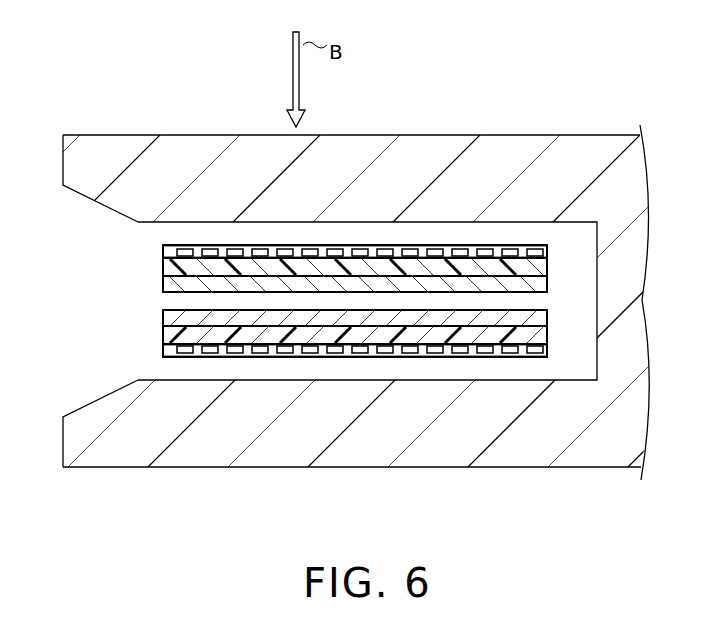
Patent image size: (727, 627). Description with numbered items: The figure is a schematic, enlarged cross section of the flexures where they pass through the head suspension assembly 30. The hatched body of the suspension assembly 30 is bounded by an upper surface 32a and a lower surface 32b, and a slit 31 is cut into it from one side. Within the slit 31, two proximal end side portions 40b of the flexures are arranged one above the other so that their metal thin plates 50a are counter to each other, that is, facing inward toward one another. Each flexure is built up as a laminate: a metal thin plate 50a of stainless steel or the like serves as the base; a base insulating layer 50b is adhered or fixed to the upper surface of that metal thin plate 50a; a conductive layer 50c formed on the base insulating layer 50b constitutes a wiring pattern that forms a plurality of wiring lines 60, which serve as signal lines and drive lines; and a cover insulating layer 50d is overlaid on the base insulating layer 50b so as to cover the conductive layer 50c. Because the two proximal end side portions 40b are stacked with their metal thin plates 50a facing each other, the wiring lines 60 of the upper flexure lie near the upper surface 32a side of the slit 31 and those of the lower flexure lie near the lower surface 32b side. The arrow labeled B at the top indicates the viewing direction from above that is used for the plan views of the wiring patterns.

The head suspension assembly 30 is at (598, 150).
The slit 31 is at (367, 225).
The upper surface 32a is at (527, 135).
The lower surface 32b is at (505, 467).
The proximal end side portion 40b is at (220, 245).
The metal thin plate 50a is at (163, 317).
The base insulating layer 50b is at (163, 268).
The conductive layer 50c is at (168, 258).
The cover insulating layer 50d is at (200, 246).
The wiring lines 60 is at (343, 245).